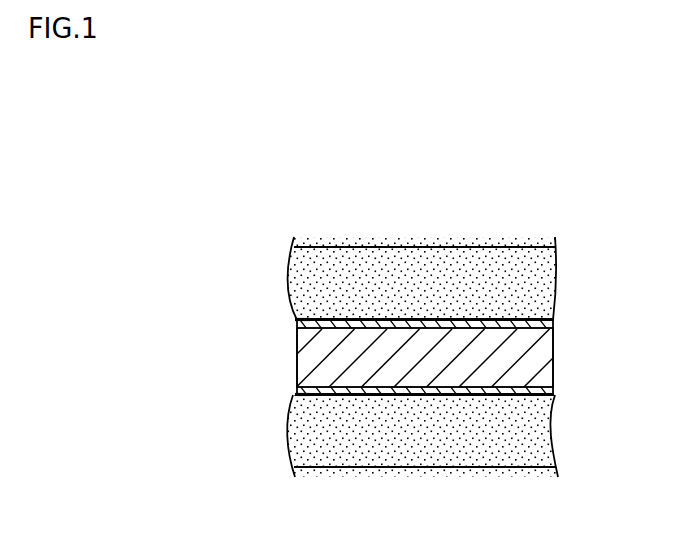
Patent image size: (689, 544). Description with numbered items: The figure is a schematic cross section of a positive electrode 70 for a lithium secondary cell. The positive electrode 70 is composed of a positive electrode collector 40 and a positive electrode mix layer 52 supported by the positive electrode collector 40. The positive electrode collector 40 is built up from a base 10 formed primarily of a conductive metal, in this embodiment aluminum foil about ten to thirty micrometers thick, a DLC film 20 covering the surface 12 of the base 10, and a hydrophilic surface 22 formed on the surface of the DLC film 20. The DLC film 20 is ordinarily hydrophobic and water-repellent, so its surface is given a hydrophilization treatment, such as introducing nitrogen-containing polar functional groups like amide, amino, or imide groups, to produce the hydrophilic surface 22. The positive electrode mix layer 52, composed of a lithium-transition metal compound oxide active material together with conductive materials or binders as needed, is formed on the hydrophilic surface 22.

The positive electrode 70 is at (548, 152).
The positive electrode mix layer 52 is at (497, 247).
The hydrophilic surface 22 is at (555, 316).
The DLC film 20 is at (556, 324).
The base 10 is at (556, 353).
The surface of the base 12 is at (297, 320).
The positive electrode collector 40 is at (288, 349).